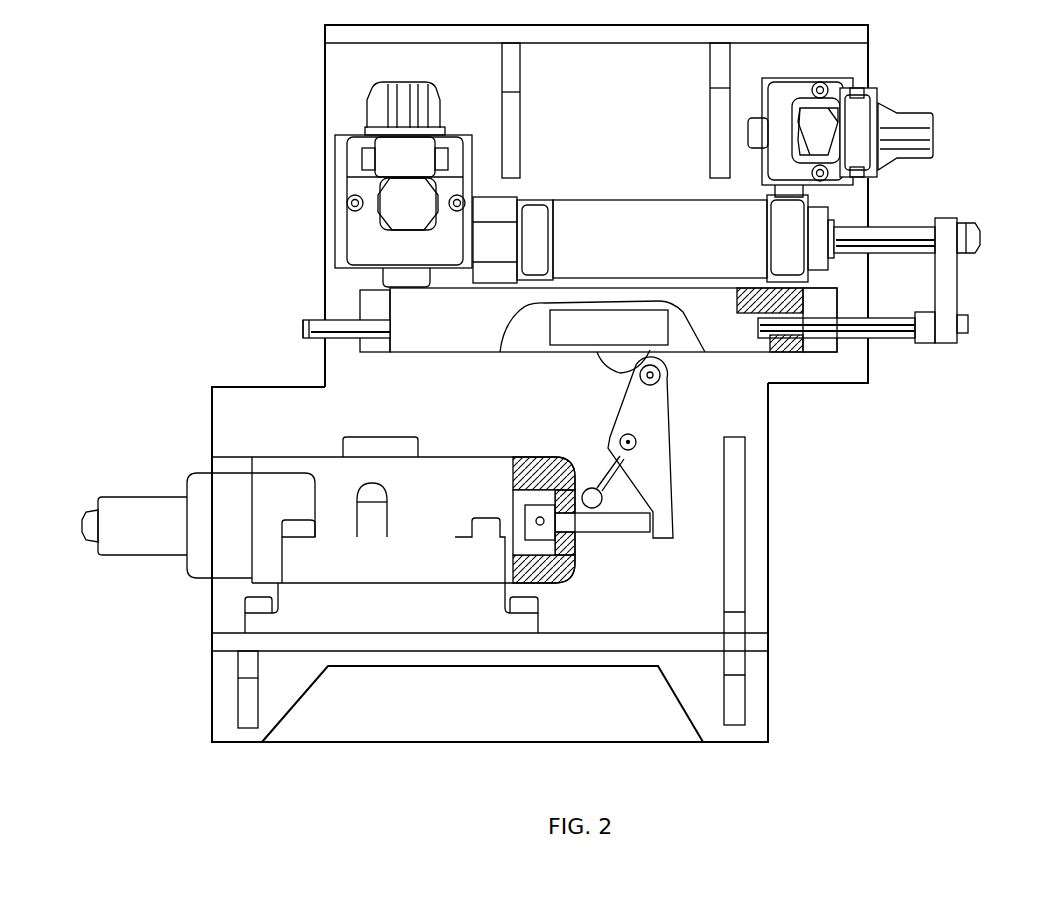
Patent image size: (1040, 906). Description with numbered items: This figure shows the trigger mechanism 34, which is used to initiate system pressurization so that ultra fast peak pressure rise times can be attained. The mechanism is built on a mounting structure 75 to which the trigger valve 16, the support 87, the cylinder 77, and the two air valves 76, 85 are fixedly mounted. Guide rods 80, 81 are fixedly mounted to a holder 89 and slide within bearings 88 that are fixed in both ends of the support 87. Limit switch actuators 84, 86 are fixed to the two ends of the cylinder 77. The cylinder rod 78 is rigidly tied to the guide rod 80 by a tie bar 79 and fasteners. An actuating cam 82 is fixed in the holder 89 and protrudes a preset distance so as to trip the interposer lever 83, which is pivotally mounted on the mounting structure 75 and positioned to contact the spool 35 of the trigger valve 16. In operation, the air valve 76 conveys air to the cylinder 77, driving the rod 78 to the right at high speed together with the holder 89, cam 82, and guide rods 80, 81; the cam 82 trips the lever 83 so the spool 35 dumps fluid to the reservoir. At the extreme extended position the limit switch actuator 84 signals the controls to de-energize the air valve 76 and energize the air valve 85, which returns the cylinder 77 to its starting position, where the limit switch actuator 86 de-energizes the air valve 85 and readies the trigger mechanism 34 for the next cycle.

The trigger valve 16 is at (205, 558).
The trigger mechanism 34 is at (262, 173).
The spool 35 is at (624, 522).
The mounting structure 75 is at (758, 533).
The air valve 76 is at (388, 100).
The cylinder 77 is at (621, 217).
The cylinder rod 78 is at (895, 232).
The tie bar 79 is at (948, 285).
The guide rod 80 is at (890, 328).
The guide rod 81 is at (318, 330).
The actuating cam 82 is at (620, 355).
The interposer lever 83 is at (655, 416).
The limit switch actuator 84 is at (790, 240).
The air valve 85 is at (903, 118).
The limit switch actuator 86 is at (537, 215).
The support 87 is at (440, 330).
The bearings 88 is at (787, 348).
The holder 89 is at (565, 333).